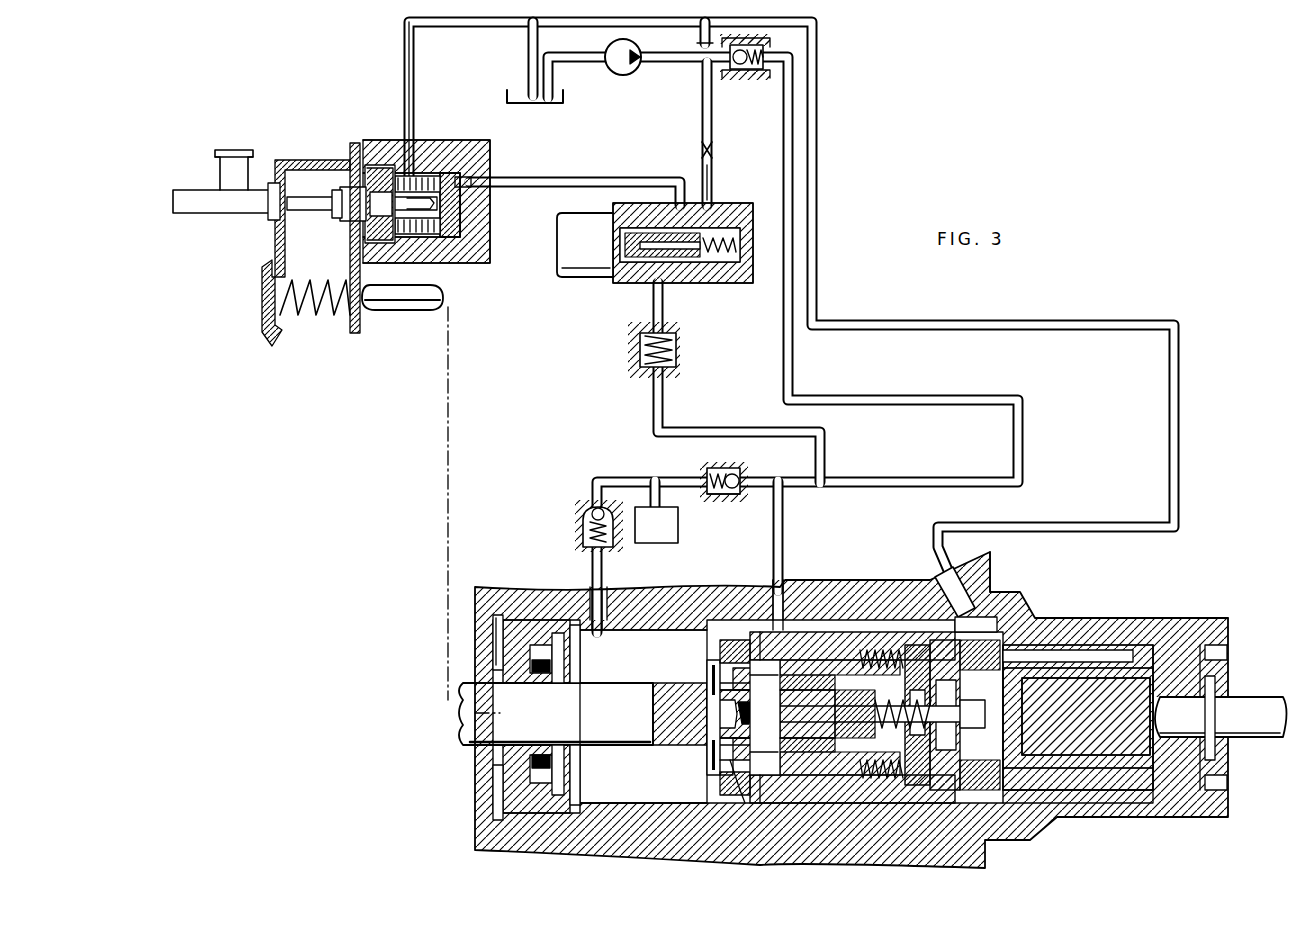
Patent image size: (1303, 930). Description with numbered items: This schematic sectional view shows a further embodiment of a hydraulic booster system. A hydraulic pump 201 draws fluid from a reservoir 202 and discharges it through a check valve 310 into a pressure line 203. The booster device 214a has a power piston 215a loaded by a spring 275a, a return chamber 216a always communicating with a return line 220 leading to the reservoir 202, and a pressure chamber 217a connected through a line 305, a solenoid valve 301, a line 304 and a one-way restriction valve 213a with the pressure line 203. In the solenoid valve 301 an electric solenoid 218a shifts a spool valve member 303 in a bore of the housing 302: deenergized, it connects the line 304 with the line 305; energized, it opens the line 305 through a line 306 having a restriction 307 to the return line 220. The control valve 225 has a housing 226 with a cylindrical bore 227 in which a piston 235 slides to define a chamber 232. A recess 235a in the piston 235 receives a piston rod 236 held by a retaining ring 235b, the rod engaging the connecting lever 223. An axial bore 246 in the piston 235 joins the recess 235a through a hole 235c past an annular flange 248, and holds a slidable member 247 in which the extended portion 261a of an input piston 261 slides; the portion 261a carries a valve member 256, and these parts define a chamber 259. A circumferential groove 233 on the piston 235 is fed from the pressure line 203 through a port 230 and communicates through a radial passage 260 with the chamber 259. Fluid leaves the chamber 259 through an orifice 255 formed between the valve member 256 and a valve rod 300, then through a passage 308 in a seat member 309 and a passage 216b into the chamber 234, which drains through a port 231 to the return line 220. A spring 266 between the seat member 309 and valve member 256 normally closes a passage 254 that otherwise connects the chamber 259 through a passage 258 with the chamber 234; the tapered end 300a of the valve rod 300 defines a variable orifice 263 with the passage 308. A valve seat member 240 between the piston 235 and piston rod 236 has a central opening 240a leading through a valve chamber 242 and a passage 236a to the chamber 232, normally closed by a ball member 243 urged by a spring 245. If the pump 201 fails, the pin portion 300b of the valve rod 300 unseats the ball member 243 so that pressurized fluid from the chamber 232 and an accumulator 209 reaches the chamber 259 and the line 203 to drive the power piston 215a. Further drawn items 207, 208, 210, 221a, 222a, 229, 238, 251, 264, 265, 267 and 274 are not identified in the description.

The hydraulic pump 201 is at (637, 70).
The hydraulic fluid reservoir 202 is at (566, 100).
The pressure line 203 is at (793, 112).
The check valve 207 is at (729, 516).
The check valve 208 is at (700, 468).
The accumulator 209 is at (655, 543).
The conduit 210 is at (592, 572).
The one-way restriction valve 213a is at (624, 346).
The booster device 214a is at (459, 278).
The power piston 215a is at (458, 170).
The return chamber 216a is at (420, 165).
The passage 216b is at (1008, 660).
The pressure chamber 217a is at (468, 182).
The electric solenoid 218a is at (580, 212).
The return line 220 is at (815, 138).
The control lever 221a is at (212, 212).
The control rod 222a is at (308, 212).
The connecting lever 223 is at (348, 258).
The control valve 225 is at (1102, 606).
The housing 226 is at (1142, 622).
The cylindrical bore 227 is at (634, 805).
The inlet passage 229 is at (600, 592).
The port 230 is at (786, 582).
The port 231 is at (940, 568).
The chamber 232 is at (660, 781).
The circumferential groove 233 is at (808, 660).
The chamber 234 is at (985, 590).
The piston 235 is at (772, 803).
The recess 235a is at (714, 770).
The retaining ring 235b is at (728, 648).
The hole 235c is at (780, 625).
The piston rod 236 is at (392, 315).
The passage 236a is at (706, 685).
The return spring 238 is at (312, 320).
The valve seat member 240 is at (728, 780).
The central opening 240a is at (745, 668).
The valve chamber 242 is at (660, 715).
The ball member 243 is at (712, 750).
The spring 245 is at (660, 698).
The axial bore 246 is at (830, 738).
The slidable member 247 is at (895, 775).
The annular flange 248 is at (765, 780).
The end plate 251 is at (1010, 796).
The passage 254 is at (885, 650).
The orifice 255 is at (850, 722).
The valve member 256 is at (905, 730).
The passage 258 is at (918, 645).
The chamber 259 is at (840, 738).
The radial passage 260 is at (800, 632).
The input piston 261 is at (1215, 780).
The extended portion 261a is at (992, 620).
The variable orifice 263 is at (1025, 742).
The retainer 264 is at (970, 790).
The seal 265 is at (805, 775).
The spring 266 is at (965, 760).
The plate 267 is at (1000, 775).
The relief valve 274 is at (569, 522).
The spring 275a is at (440, 172).
The valve rod 300 is at (868, 632).
The tapered end 300a is at (962, 636).
The pin portion 300b is at (742, 805).
The solenoid valve 301 is at (712, 190).
The housing 302 is at (762, 299).
The spool valve member 303 is at (730, 270).
The line 304 is at (652, 300).
The line 305 is at (582, 176).
The line 306 is at (714, 158).
The restriction 307 is at (698, 152).
The passage 308 is at (1025, 724).
The seat member 309 is at (1025, 706).
The check valve 310 is at (746, 94).